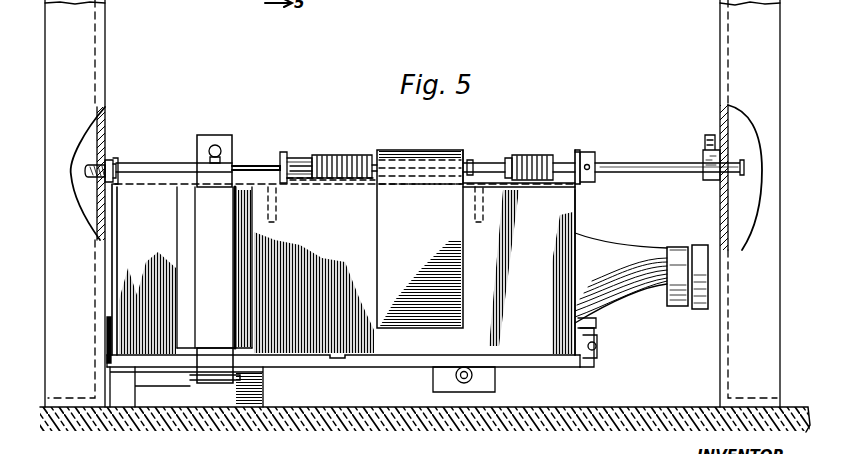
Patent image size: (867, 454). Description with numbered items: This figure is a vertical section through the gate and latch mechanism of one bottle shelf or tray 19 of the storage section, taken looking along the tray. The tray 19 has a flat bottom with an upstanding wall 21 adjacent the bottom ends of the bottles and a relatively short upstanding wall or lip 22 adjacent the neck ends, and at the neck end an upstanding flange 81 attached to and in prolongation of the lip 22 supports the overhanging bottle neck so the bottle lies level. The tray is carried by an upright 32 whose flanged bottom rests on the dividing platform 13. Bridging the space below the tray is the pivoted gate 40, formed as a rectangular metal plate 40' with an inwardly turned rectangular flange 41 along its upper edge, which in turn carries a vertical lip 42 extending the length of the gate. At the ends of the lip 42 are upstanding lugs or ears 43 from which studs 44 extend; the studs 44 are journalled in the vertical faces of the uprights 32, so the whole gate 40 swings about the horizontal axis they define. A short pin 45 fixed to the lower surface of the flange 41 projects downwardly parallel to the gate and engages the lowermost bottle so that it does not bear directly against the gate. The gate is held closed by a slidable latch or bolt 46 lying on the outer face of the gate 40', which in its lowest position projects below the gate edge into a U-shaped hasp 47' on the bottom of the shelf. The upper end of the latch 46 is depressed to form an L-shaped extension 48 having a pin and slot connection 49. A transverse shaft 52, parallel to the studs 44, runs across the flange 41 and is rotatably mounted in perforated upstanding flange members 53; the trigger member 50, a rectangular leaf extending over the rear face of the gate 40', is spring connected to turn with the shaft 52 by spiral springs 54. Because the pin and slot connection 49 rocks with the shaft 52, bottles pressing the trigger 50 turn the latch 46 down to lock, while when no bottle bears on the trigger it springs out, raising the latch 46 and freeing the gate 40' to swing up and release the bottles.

The dividing platform 13 is at (632, 407).
The shelf or tray 19 is at (582, 367).
The upstanding wall 21 is at (105, 332).
The upstanding wall or lip 22 is at (598, 335).
The upright 32 is at (764, 340).
The gate 40 is at (343, 243).
The pivoted gate plate 40' is at (596, 272).
The rectangular flange 41 is at (330, 190).
The vertical lip 42 is at (165, 167).
The lug or ear 43 is at (114, 158).
The stud 44 is at (90, 172).
The pin 45 is at (278, 210).
The slidable latch or bolt 46 is at (220, 383).
The U-shaped hasp 47' is at (209, 320).
The L-shaped extension 48 is at (232, 137).
The pin and slot connection 49 is at (215, 145).
The actuating tongue or trigger member 50 is at (420, 239).
The transverse shaft 52 is at (300, 160).
The perforated upstanding flange member 53 is at (283, 152).
The spiral spring 54 is at (338, 157).
The upstanding flange 81 is at (597, 330).